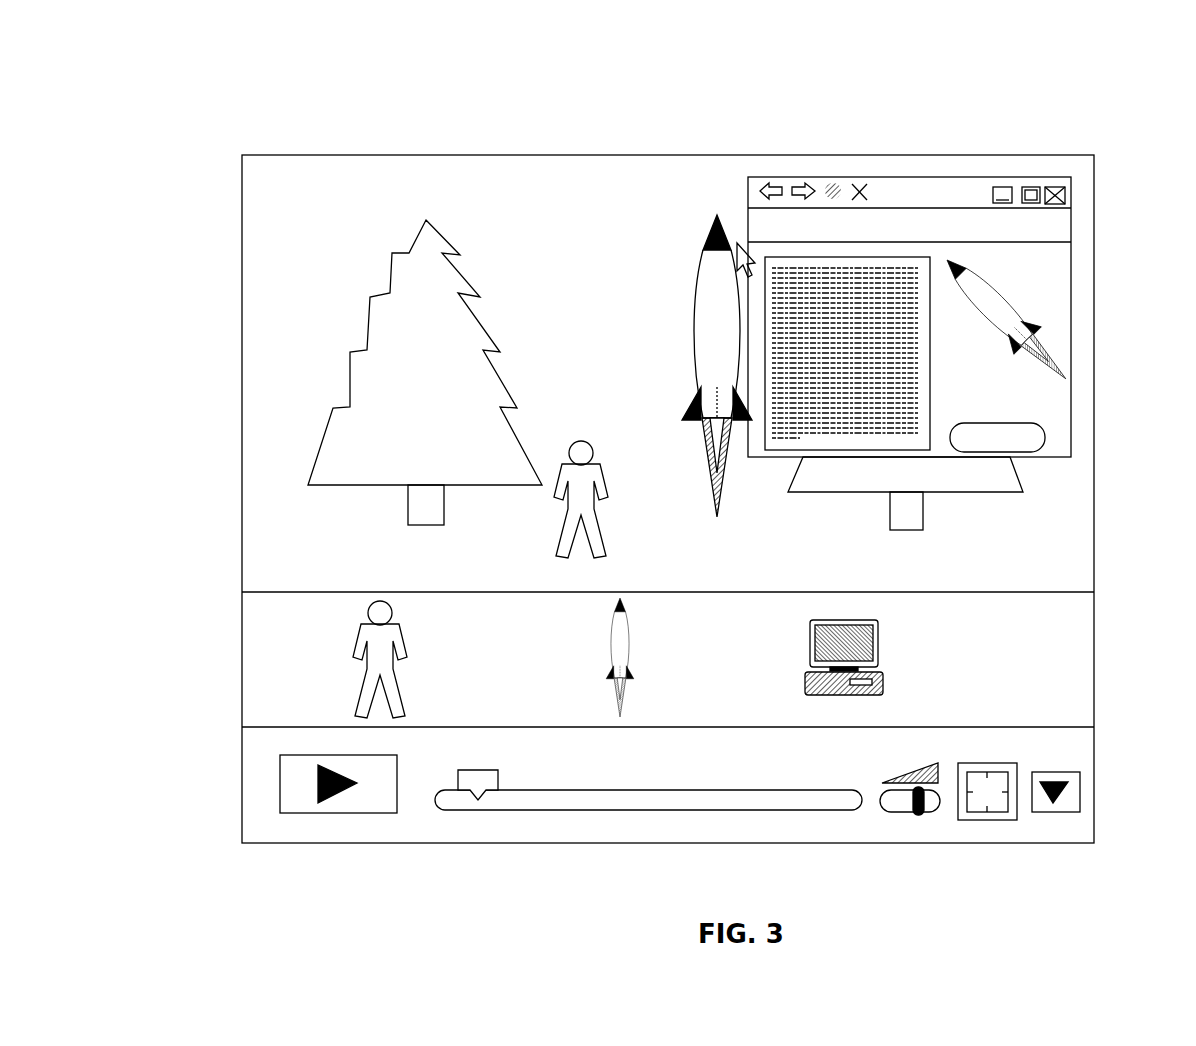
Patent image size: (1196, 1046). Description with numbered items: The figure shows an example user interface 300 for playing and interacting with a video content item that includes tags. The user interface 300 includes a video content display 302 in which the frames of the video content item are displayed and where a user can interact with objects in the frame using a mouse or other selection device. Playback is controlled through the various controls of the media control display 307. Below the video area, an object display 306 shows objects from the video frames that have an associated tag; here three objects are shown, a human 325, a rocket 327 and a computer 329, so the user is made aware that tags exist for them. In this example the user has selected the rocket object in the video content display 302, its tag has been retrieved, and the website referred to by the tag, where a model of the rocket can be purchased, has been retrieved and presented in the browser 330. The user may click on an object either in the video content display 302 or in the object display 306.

The user interface 300 is at (226, 146).
The video content display 302 is at (1123, 157).
The object display 306 is at (218, 594).
The media control display 307 is at (222, 727).
The human 325 is at (412, 633).
The rocket 327 is at (632, 640).
The computer 329 is at (887, 640).
The browser 330 is at (1017, 176).